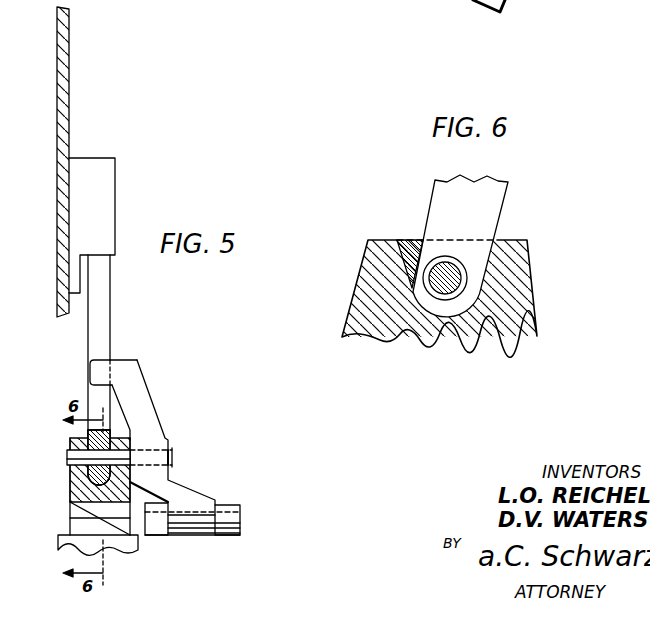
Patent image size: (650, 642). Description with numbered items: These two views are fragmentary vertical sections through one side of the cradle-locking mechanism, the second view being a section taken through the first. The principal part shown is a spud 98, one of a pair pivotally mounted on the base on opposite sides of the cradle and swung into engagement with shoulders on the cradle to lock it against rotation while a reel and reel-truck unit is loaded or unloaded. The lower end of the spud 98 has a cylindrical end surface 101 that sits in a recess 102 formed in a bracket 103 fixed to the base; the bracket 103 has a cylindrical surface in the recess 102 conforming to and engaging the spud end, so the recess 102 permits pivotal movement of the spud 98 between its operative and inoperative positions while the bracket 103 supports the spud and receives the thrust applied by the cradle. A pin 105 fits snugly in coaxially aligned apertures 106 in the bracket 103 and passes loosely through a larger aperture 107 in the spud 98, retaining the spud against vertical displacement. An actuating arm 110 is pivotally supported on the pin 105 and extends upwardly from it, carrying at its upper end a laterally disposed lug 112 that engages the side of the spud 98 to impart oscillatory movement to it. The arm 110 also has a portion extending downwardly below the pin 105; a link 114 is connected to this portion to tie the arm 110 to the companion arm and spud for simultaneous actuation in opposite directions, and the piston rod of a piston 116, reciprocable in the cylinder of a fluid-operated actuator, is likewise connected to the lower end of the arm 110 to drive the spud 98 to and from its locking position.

In FIG. 5, the spud 98 is at (102, 309).
In FIG. 6, the spud 98 is at (490, 203).
In FIG. 5, the cylindrical end surface 101 is at (78, 487).
In FIG. 6, the cylindrical end surface 101 is at (463, 320).
In FIG. 6, the recess 102 is at (410, 246).
In FIG. 5, the bracket 103 is at (117, 518).
In FIG. 6, the bracket 103 is at (377, 278).
In FIG. 5, the pin 105 is at (170, 462).
In FIG. 6, the pin 105 is at (445, 292).
In FIG. 5, the aperture 106 is at (130, 455).
In FIG. 5, the aperture 107 is at (67, 456).
In FIG. 6, the aperture 107 is at (462, 275).
In FIG. 5, the actuating arm 110 is at (137, 388).
In FIG. 5, the lug 112 is at (97, 367).
In FIG. 5, the link 114 is at (158, 535).
In FIG. 5, the piston 116 is at (229, 533).